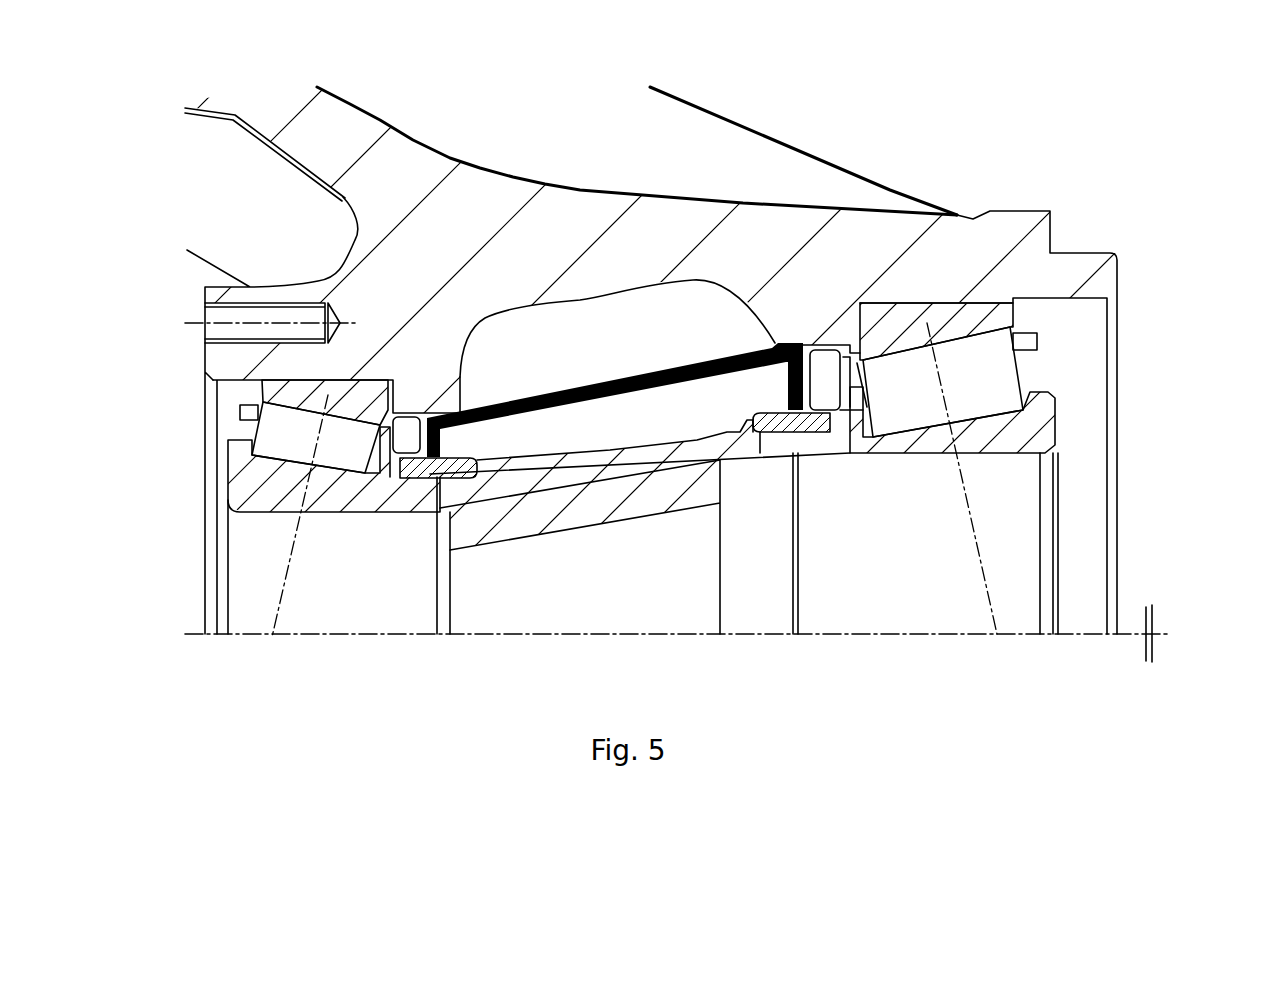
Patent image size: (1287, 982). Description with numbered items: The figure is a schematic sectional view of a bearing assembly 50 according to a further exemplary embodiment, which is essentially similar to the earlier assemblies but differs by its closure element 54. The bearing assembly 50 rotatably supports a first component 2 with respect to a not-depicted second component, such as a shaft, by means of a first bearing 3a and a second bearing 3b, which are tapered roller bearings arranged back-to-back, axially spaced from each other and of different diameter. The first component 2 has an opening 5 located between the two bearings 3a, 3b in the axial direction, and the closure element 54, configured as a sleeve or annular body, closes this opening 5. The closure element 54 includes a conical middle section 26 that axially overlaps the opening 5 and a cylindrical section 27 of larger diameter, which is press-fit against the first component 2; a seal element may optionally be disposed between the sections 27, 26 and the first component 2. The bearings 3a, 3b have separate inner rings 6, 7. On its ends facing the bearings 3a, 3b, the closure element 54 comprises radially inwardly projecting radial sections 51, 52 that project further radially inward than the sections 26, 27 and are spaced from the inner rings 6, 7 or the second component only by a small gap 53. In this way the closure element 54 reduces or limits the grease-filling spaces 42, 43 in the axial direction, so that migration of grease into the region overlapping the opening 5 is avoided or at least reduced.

The first component 2 is at (858, 258).
The opening 5 is at (748, 347).
The bearing assembly 50 is at (990, 150).
The closure element 54 is at (642, 387).
The first bearing 3a is at (1023, 437).
The second bearing 3b is at (255, 487).
The inner ring 6 is at (338, 505).
The grease-filling space 43 is at (345, 495).
The gap 53 is at (412, 456).
The radial section 51 is at (445, 483).
The middle section 26 is at (478, 477).
The section 27 is at (770, 437).
The radial section 52 is at (832, 436).
The grease-filling space 42 is at (820, 438).
The inner ring 7 is at (927, 442).